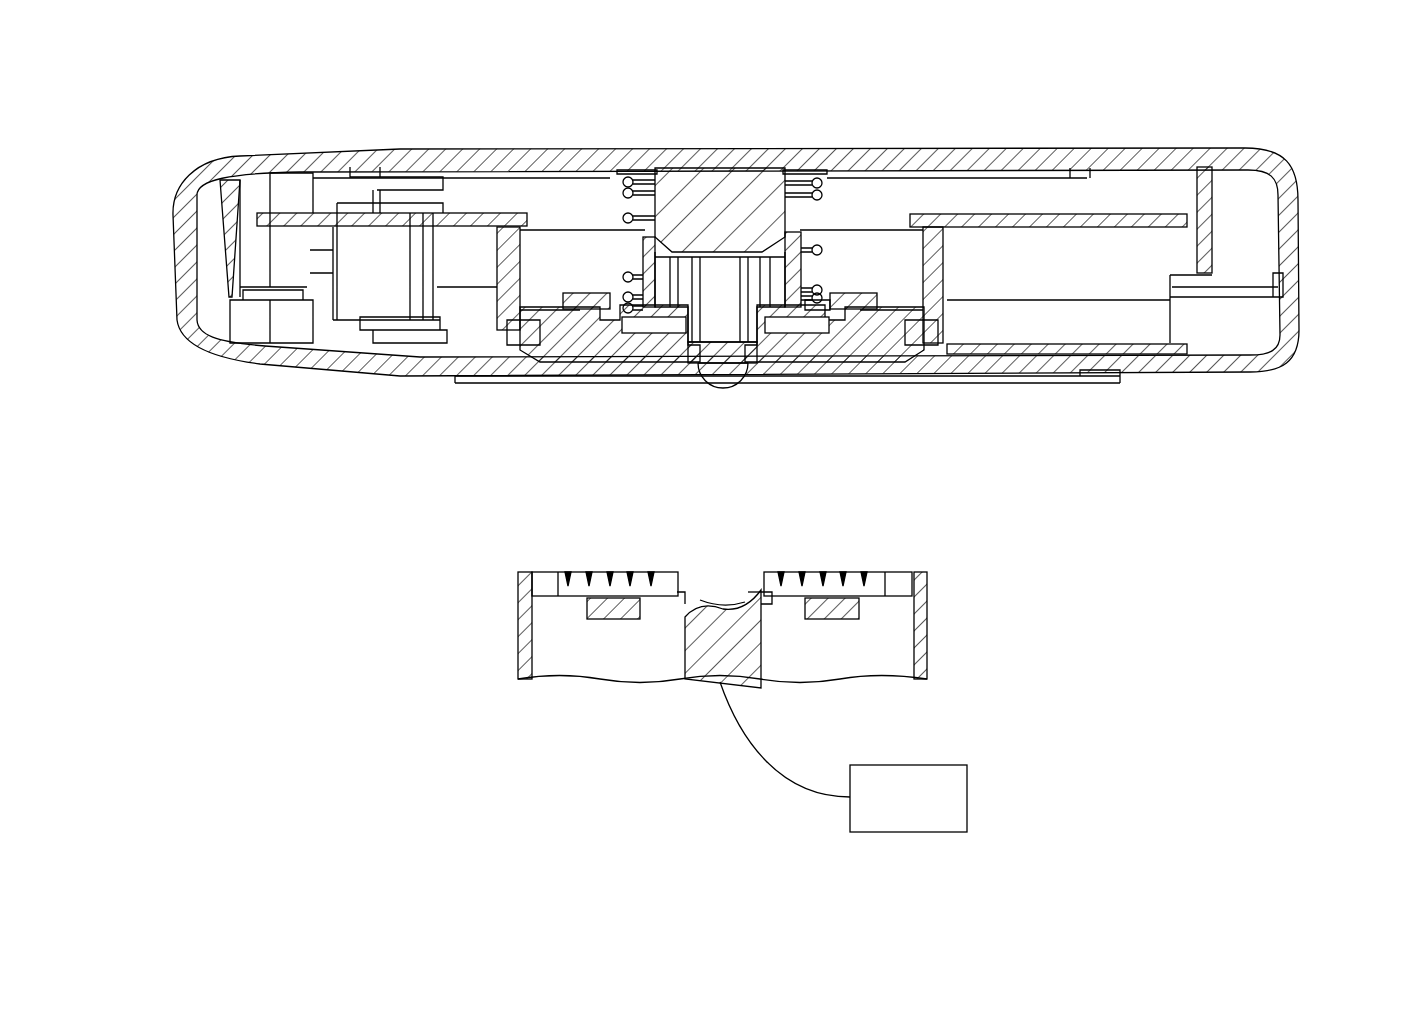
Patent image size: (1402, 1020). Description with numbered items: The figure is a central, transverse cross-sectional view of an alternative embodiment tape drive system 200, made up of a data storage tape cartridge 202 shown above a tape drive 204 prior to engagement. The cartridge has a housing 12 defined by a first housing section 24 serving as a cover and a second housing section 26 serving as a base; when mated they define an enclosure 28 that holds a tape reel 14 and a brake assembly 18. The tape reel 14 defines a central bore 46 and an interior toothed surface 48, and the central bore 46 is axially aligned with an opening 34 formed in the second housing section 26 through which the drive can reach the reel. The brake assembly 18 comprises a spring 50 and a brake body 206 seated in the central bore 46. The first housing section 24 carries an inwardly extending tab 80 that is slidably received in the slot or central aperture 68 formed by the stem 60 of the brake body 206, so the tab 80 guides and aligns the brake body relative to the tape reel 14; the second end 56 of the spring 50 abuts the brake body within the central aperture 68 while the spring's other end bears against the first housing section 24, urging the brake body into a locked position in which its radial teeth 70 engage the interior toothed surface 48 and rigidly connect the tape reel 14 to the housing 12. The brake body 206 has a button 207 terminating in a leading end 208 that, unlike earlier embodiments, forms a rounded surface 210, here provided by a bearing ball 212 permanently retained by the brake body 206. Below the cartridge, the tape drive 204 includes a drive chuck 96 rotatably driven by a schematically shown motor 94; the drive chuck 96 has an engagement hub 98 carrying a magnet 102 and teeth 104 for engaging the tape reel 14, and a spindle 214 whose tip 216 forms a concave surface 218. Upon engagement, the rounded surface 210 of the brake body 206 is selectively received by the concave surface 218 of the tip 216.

The housing 12 is at (1312, 262).
The tape reel 14 is at (468, 210).
The brake assembly 18 is at (627, 245).
The first housing section 24 is at (1147, 157).
The second housing section 26 is at (1293, 346).
The enclosure 28 is at (1253, 220).
The opening 34 is at (519, 366).
The central bore 46 is at (678, 357).
The interior toothed surface 48 is at (805, 353).
The spring 50 is at (836, 184).
The second end 56 is at (822, 170).
The stem 60 is at (787, 232).
The central aperture 68 is at (815, 276).
The radial teeth 70 is at (613, 365).
The tab 80 is at (695, 170).
The motor 94 is at (922, 765).
The drive chuck 96 is at (512, 662).
The engagement hub 98 is at (513, 624).
The magnet 102 is at (606, 619).
The teeth 104 is at (549, 588).
The tape drive system 200 is at (149, 137).
The data storage tape cartridge 202 is at (1244, 141).
The tape drive 204 is at (990, 545).
The brake body 206 is at (813, 271).
The button 207 is at (771, 348).
The leading end 208 is at (703, 363).
The rounded surface 210 is at (724, 384).
The bearing ball 212 is at (726, 387).
The spindle 214 is at (766, 643).
The tip 216 is at (762, 603).
The concave surface 218 is at (716, 605).